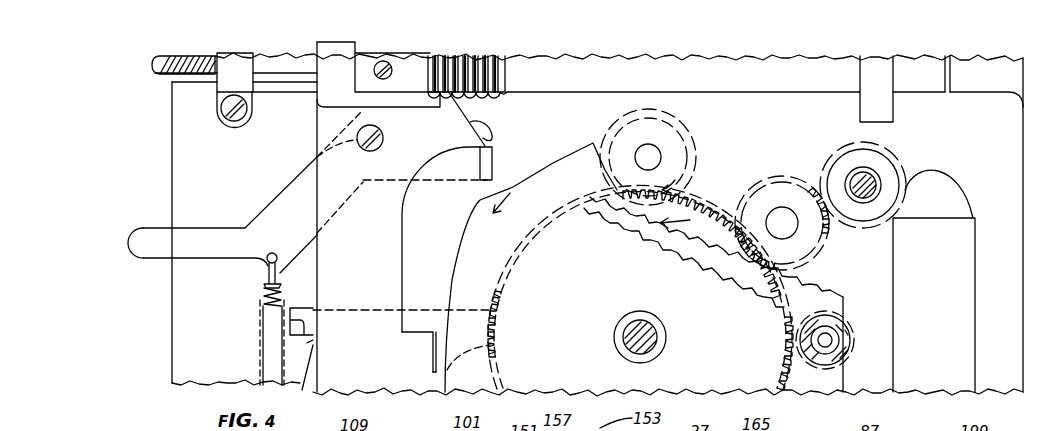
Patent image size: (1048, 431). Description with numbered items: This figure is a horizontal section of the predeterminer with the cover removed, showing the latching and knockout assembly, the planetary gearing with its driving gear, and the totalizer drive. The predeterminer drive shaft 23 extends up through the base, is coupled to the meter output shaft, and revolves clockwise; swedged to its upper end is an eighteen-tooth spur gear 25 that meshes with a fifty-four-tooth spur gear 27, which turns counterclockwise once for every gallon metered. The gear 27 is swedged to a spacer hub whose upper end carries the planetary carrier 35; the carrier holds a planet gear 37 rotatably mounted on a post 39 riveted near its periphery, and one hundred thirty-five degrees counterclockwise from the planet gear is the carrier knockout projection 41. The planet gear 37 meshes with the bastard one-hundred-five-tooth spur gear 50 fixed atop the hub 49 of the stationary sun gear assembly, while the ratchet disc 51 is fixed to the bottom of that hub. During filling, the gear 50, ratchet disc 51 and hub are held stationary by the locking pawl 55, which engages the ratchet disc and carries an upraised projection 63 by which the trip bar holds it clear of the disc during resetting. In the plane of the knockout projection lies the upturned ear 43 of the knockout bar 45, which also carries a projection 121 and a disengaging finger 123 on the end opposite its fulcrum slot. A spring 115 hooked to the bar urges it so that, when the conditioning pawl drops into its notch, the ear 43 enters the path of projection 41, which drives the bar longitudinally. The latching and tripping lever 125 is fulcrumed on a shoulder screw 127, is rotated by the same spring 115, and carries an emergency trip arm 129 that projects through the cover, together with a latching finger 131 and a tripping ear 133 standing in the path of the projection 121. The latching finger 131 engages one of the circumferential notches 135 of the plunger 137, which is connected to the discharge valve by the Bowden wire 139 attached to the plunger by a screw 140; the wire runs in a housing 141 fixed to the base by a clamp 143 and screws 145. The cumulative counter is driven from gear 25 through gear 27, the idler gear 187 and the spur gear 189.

The housing 141 is at (165, 75).
The Bowden wire 139 is at (266, 62).
The clamp 143 is at (254, 92).
The screws 145 is at (234, 120).
The disengaging finger 123 is at (334, 52).
The screw 140 is at (390, 66).
The circumferential notches 135 is at (507, 93).
The latching finger 131 is at (466, 105).
The projection 121 is at (494, 140).
The tripping ear 133 is at (493, 154).
The knockout bar 45 is at (390, 265).
The upturned ear 43 is at (430, 353).
The shoulder screw 127 is at (316, 156).
The emergency trip arm 129 is at (150, 250).
The latching and tripping lever 125 is at (292, 197).
The upraised projection 63 is at (301, 310).
The spring 115 is at (263, 345).
The locking pawl 55 is at (309, 348).
The ratchet disc 51 is at (491, 359).
The carrier knockout projection 41 is at (470, 215).
The spur gear 27 is at (687, 197).
The spur gear 50 is at (782, 380).
The hub 49 is at (662, 345).
The spur gear 25 is at (699, 168).
The predeterminer drive shaft 23 is at (641, 137).
The plunger 137 is at (666, 85).
The idler gear 187 is at (773, 175).
The spur gear 189 is at (890, 153).
The planet gear 37 is at (851, 340).
The post 39 is at (843, 317).
The planetary carrier 35 is at (833, 377).